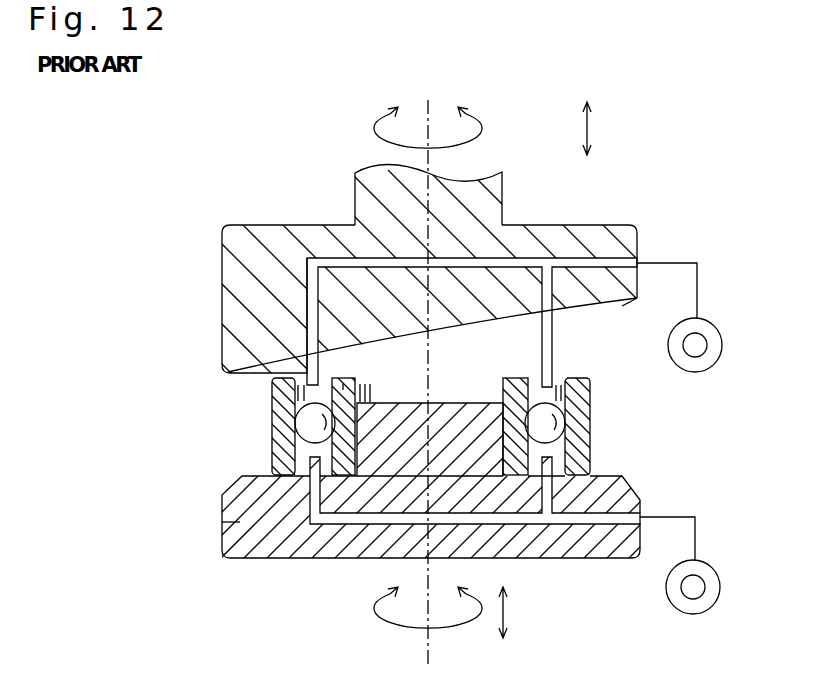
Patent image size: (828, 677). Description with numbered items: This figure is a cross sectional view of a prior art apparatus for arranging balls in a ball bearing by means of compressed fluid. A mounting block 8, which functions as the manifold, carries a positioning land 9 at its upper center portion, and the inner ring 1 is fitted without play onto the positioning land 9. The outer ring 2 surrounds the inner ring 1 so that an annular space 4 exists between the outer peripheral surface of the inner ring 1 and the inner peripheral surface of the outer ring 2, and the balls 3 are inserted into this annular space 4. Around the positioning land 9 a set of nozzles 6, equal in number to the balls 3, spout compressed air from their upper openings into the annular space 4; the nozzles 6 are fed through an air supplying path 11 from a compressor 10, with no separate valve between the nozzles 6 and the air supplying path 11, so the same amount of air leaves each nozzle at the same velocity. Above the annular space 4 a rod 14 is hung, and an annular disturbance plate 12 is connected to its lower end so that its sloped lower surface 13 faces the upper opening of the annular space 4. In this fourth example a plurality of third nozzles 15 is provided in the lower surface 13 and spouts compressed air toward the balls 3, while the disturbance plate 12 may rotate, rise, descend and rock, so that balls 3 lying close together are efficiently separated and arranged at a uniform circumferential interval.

The inner ring 1 is at (343, 383).
The outer ring 2 is at (272, 447).
The balls 3 is at (305, 424).
The annular space 4 is at (552, 393).
The nozzles 6 is at (256, 516).
The mounting block 8 is at (266, 527).
The positioning land 9 is at (385, 443).
The compressor 10 is at (725, 346).
The air supplying path 11 is at (310, 283).
The disturbance plate 12 is at (597, 237).
The sloped lower surface 13 is at (600, 306).
The rod 14 is at (487, 207).
The third nozzles 15 is at (310, 364).